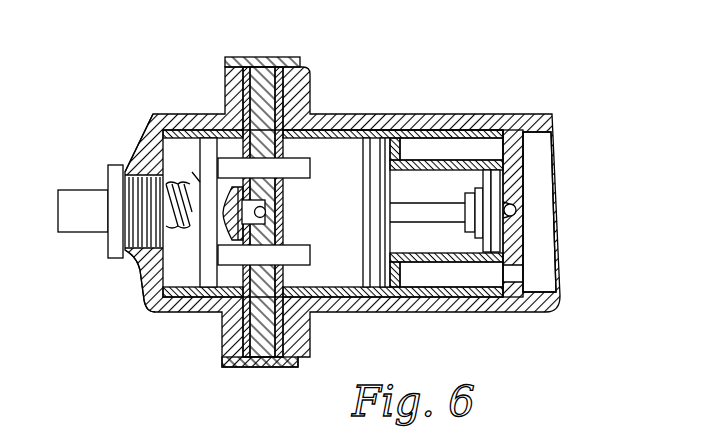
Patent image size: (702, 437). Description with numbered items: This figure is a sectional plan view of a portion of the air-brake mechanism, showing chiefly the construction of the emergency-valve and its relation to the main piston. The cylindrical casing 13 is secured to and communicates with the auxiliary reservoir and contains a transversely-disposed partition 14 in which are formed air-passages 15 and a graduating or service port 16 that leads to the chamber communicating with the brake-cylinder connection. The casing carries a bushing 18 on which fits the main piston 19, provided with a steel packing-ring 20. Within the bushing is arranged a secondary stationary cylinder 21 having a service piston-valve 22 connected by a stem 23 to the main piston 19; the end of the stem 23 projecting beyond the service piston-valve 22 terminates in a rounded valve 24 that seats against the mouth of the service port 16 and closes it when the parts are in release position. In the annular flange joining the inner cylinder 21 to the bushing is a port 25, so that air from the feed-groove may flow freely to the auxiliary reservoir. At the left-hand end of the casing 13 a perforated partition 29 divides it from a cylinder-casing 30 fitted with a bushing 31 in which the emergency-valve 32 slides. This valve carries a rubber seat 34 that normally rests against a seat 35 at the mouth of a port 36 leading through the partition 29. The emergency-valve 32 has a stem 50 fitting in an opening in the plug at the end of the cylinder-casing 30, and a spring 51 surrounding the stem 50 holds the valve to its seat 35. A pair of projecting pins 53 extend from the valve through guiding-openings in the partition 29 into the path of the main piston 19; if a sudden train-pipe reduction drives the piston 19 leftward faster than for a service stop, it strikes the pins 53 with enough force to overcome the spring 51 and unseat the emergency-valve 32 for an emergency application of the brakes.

The cylindrical casing 13 is at (466, 117).
The transversely-disposed partition 14 is at (524, 173).
The air-passages 15 is at (524, 151).
The graduating or service port 16 is at (517, 208).
The bushing 18 is at (346, 131).
The main piston 19 is at (363, 212).
The steel packing-ring 20 is at (370, 182).
The secondary stationary cylinder 21 is at (427, 190).
The service piston-valve 22 is at (477, 240).
The stem 23 is at (422, 218).
The rounded valve 24 is at (508, 216).
The port 25 is at (401, 150).
The perforated partition 29 is at (267, 58).
The cylinder-casing 30 is at (150, 131).
The bushing 31 is at (175, 134).
The emergency-valve 32 is at (203, 271).
The rubber seat 34 is at (237, 193).
The seat 35 is at (241, 199).
The port 36 is at (266, 212).
The stem 50 is at (166, 216).
The spring 51 is at (146, 276).
The projecting pins 53 is at (306, 163).